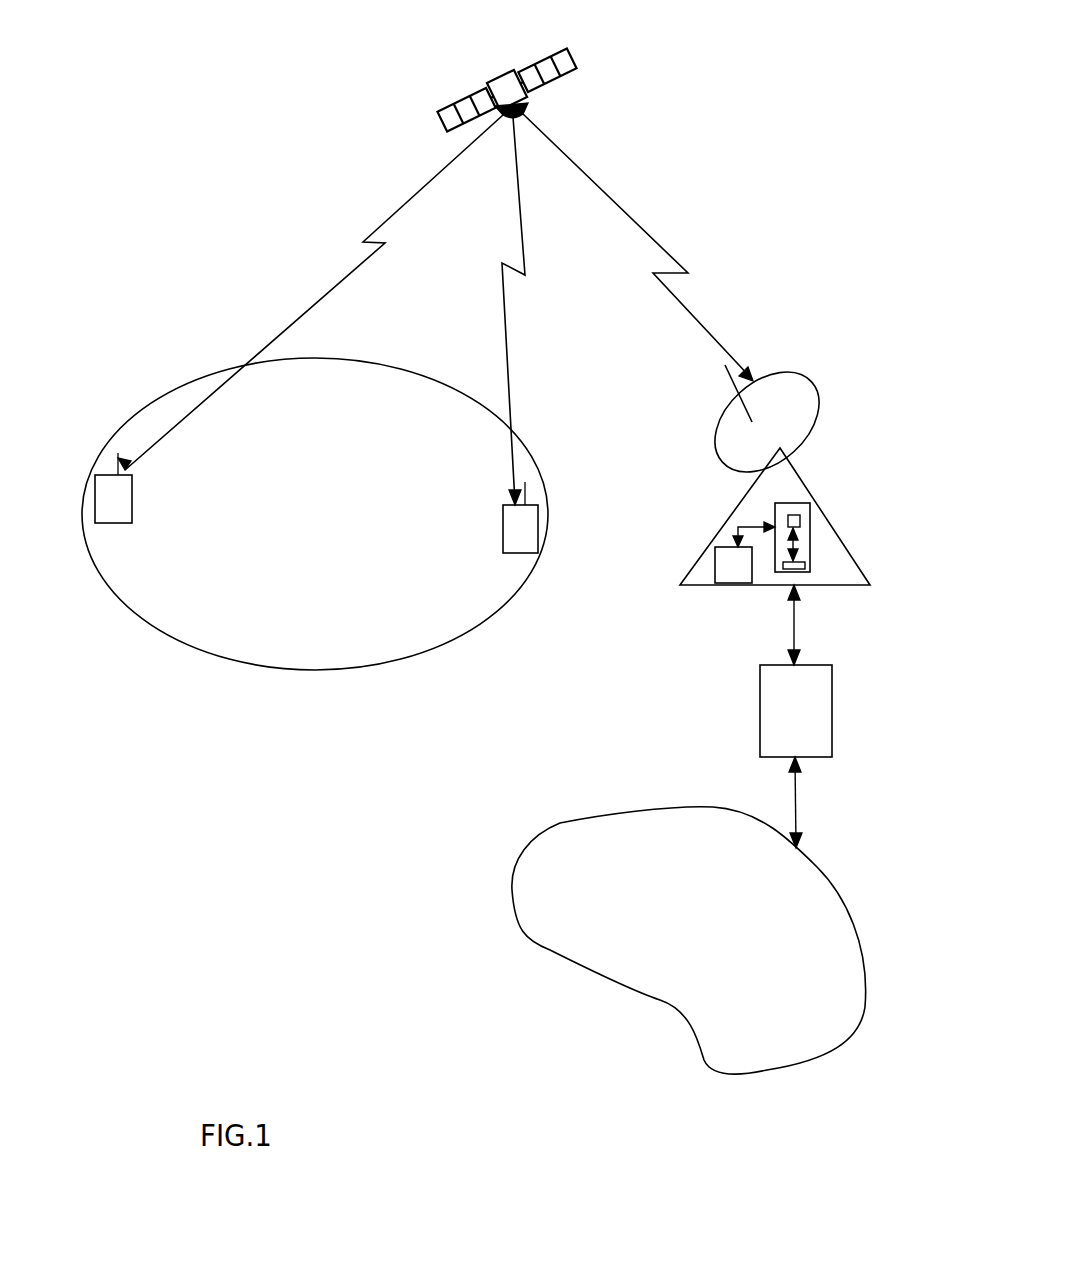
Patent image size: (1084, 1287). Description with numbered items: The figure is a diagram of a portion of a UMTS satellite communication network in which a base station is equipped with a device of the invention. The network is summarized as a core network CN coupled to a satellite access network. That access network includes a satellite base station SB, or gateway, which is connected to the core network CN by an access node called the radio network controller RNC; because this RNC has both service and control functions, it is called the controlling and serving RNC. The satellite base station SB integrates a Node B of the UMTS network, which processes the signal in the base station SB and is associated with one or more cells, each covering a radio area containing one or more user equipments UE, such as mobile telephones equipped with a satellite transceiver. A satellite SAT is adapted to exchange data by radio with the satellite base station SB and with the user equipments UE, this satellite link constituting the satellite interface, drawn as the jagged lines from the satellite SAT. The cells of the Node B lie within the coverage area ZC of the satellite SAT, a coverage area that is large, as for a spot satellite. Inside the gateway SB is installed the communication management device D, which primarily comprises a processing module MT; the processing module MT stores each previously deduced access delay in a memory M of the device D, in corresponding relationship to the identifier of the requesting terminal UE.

The satellite SAT is at (545, 83).
The user equipment UE is at (132, 500).
The coverage area ZC is at (335, 670).
The satellite base station SB is at (815, 383).
The element Node B is at (732, 585).
The processing module MT is at (800, 573).
The communication management device D is at (810, 550).
The memory M is at (773, 505).
The radio network controller RNC is at (760, 722).
The core network CN is at (714, 943).